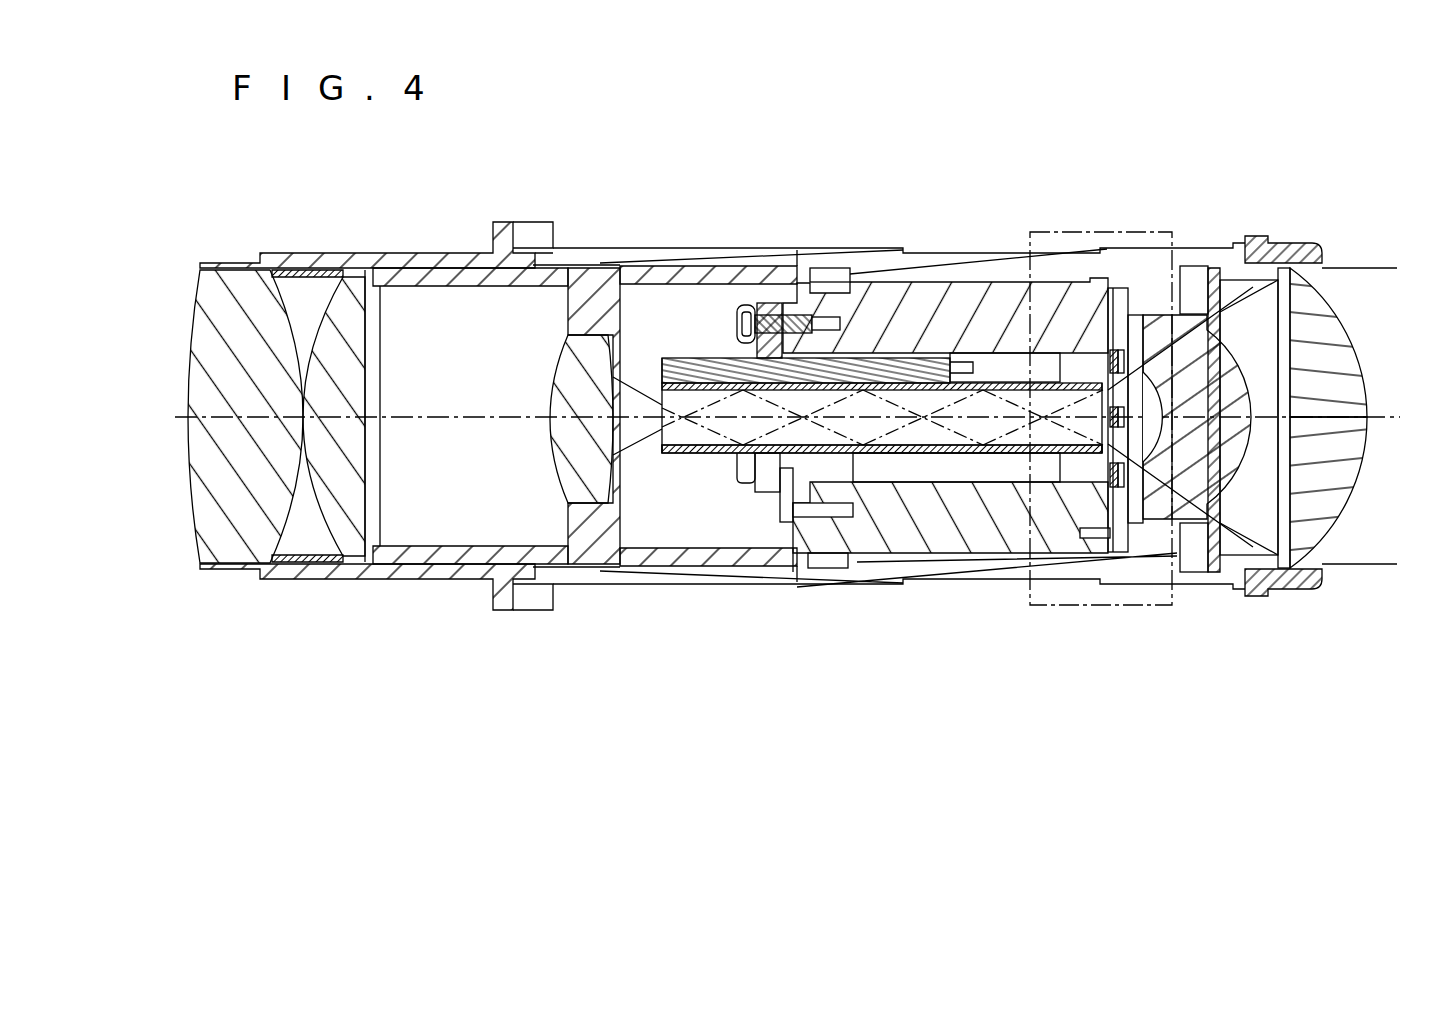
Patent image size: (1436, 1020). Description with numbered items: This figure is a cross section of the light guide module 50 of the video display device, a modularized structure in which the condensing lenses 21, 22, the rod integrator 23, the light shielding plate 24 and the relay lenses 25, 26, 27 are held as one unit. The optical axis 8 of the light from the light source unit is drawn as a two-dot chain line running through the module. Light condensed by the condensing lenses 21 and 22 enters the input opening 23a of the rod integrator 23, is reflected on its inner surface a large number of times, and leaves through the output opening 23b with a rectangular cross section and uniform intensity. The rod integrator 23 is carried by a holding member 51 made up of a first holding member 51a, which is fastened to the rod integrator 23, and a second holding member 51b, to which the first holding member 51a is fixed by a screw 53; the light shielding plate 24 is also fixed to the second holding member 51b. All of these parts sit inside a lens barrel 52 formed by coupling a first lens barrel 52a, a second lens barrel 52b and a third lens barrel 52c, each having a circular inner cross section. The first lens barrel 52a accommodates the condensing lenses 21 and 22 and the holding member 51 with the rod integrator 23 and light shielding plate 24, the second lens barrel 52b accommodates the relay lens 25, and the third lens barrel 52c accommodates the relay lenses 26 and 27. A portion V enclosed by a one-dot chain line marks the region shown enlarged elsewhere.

The light guide module 50 is at (787, 409).
The lens barrel 52 is at (443, 175).
The first lens barrel 52a is at (650, 262).
The second lens barrel 52b is at (593, 302).
The third lens barrel 52c is at (463, 246).
The screw 53 is at (770, 305).
The holding member 51 is at (863, 185).
The first holding member 51a is at (872, 372).
The second holding member 51b is at (958, 322).
The rod integrator 23 is at (895, 455).
The input opening 23a is at (1092, 432).
The output opening 23b is at (683, 447).
The light shielding plate 24 is at (1113, 555).
The condensing lens 22 is at (1200, 495).
The condensing lens 21 is at (1327, 529).
The optical axis 8 is at (1382, 429).
The relay lens 25 is at (598, 470).
The relay lens 26 is at (355, 542).
The relay lens 27 is at (215, 542).
The portion V is at (1103, 231).